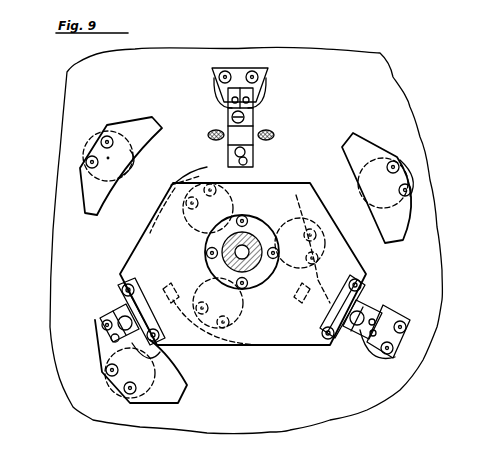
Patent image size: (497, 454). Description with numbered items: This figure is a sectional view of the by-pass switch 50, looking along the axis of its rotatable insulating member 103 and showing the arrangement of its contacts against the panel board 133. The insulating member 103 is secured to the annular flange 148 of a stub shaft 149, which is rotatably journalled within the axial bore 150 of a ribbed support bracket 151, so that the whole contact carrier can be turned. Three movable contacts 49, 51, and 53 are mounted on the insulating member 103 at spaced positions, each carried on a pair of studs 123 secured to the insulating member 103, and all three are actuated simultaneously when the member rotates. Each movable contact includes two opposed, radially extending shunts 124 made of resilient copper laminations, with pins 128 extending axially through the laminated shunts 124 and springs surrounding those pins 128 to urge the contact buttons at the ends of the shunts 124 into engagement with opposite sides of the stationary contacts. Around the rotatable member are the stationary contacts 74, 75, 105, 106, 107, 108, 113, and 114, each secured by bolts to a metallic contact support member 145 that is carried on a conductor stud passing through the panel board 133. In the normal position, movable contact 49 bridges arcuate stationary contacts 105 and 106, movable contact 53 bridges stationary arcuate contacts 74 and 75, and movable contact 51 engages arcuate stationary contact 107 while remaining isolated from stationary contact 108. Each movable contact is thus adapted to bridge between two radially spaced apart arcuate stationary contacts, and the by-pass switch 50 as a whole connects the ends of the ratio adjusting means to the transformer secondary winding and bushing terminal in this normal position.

The panel board 133 is at (82, 80).
The insulating member 103 is at (167, 266).
The annular flange 148 is at (256, 280).
The stub shaft 149 is at (252, 238).
The axial bore 150 is at (222, 243).
The ribbed support bracket 151 is at (228, 258).
The arcuate stationary contact 106 is at (330, 240).
The arcuate stationary contact 107 is at (228, 340).
The stationary contact 114 is at (262, 75).
The metallic contact support member 145 is at (265, 95).
The movable contact 53 is at (263, 123).
The pin 128 is at (230, 117).
The shunt 124 is at (250, 152).
The stud 123 is at (208, 135).
The stationary arcuate contact 74 is at (140, 125).
The stationary arcuate contact 75 is at (210, 170).
The arcuate stationary contact 105 is at (397, 241).
The by-pass switch 50 is at (368, 105).
The movable contact 51 is at (117, 299).
The stationary contact 108 is at (178, 395).
The movable contact 49 is at (377, 309).
The stationary contact 113 is at (385, 360).